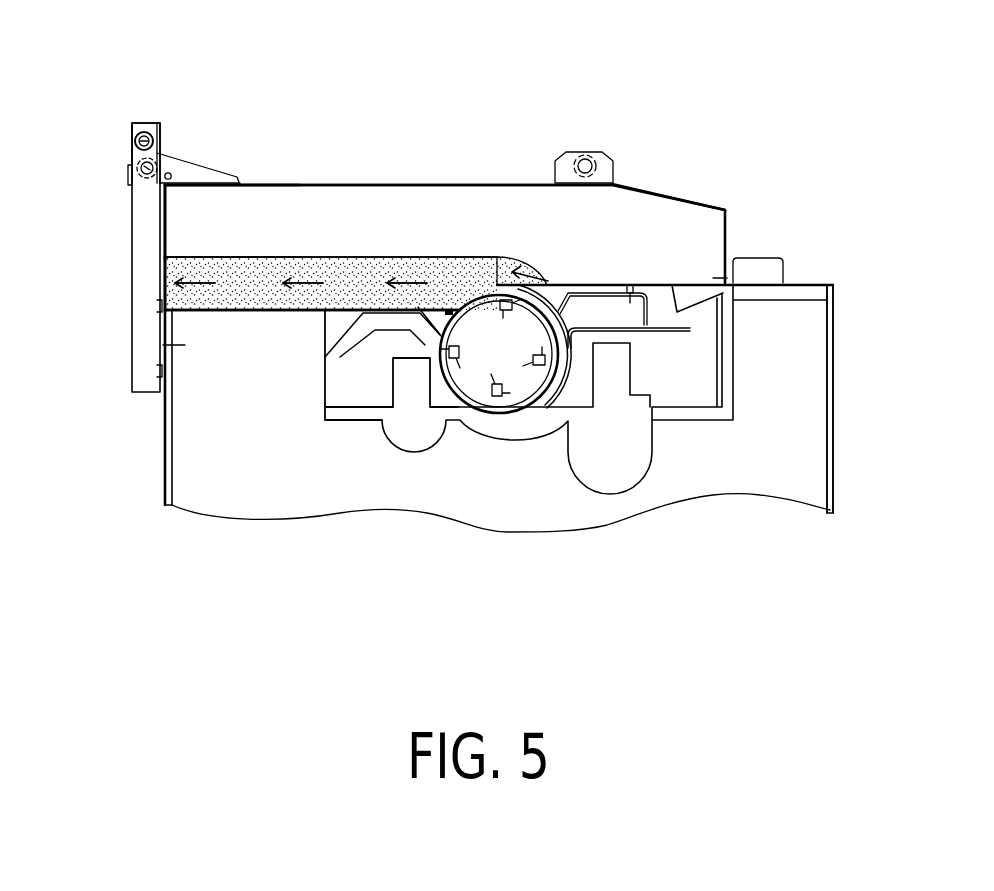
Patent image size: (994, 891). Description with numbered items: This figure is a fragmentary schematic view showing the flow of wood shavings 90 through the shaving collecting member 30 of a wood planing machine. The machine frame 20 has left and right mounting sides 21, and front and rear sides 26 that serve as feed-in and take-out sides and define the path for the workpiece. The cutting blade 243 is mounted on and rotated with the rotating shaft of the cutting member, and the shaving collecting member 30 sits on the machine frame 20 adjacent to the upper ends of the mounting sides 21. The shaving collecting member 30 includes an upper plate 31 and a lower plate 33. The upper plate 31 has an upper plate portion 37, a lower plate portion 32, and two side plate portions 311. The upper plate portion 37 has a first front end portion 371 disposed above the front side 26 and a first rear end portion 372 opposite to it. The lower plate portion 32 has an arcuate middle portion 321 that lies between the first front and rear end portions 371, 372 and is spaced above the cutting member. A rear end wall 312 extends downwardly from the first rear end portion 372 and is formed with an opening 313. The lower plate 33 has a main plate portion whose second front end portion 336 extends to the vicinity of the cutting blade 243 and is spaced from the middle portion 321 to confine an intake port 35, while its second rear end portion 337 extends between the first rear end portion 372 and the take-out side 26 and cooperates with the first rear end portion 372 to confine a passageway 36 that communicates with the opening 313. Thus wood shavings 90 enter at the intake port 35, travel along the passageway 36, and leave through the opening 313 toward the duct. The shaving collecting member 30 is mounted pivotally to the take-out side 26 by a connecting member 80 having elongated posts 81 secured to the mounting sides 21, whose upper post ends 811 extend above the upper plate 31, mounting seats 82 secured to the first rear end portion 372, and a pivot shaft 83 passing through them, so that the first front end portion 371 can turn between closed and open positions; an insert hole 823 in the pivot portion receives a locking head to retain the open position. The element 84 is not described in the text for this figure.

The machine frame 20 is at (606, 393).
The mounting side 21 is at (835, 362).
The cutting blade 243 is at (527, 393).
The front and rear sides 26 is at (163, 480).
The shaving collecting member 30 is at (700, 203).
The upper plate 31 is at (487, 180).
The side plate portion 311 is at (511, 202).
The rear end wall 312 is at (168, 208).
The opening 313 is at (160, 263).
The lower plate portion 32 is at (343, 257).
The arcuate middle portion 321 is at (548, 268).
The lower plate 33 is at (238, 312).
The second front end portion 336 is at (435, 316).
The second rear end portion 337 is at (203, 312).
The intake port 35 is at (482, 255).
The passageway 36 is at (232, 257).
The upper plate portion 37 is at (417, 183).
The first front end portion 371 is at (668, 194).
The first rear end portion 372 is at (257, 185).
The connecting member 80 is at (143, 204).
The elongated post 81 is at (140, 349).
The upper post end 811 is at (133, 123).
The mounting seat 82 is at (168, 163).
The insert hole 823 is at (172, 173).
The pivot shaft 83 is at (139, 168).
The upper screw 84 is at (135, 143).
The wood shavings 90 is at (297, 310).